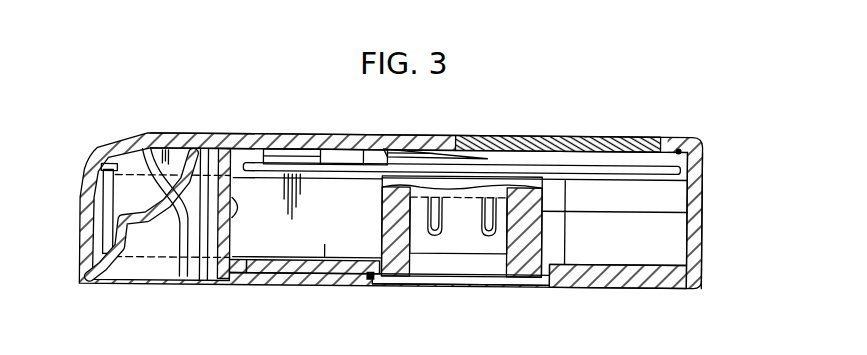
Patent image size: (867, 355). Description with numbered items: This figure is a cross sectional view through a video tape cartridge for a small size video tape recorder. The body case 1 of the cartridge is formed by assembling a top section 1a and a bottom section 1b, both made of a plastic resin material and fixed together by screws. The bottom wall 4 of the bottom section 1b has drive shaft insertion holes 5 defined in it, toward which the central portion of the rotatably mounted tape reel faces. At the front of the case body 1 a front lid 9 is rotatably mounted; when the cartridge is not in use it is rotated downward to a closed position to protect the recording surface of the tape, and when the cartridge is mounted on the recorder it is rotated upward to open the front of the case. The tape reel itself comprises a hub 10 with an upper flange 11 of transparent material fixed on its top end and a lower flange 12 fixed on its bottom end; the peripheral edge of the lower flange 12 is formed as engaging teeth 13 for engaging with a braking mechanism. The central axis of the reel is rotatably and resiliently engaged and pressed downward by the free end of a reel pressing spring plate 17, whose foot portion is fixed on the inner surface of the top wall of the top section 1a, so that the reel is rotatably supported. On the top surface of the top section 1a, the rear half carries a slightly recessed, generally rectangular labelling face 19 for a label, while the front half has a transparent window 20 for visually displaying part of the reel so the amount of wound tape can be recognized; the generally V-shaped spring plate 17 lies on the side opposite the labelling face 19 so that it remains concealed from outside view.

The body case 1 is at (703, 145).
The top section 1a is at (692, 172).
The bottom section 1b is at (692, 245).
The bottom wall 4 is at (602, 285).
The drive shaft insertion holes 5 is at (367, 280).
The front lid 9 is at (85, 198).
The hub 10 is at (395, 223).
The upper flange 11 is at (257, 174).
The lower flange 12 is at (303, 274).
The engaging teeth 13 is at (240, 275).
The reel pressing spring plate 17 is at (435, 140).
The labelling face 19 is at (300, 135).
The transparent window 20 is at (553, 137).